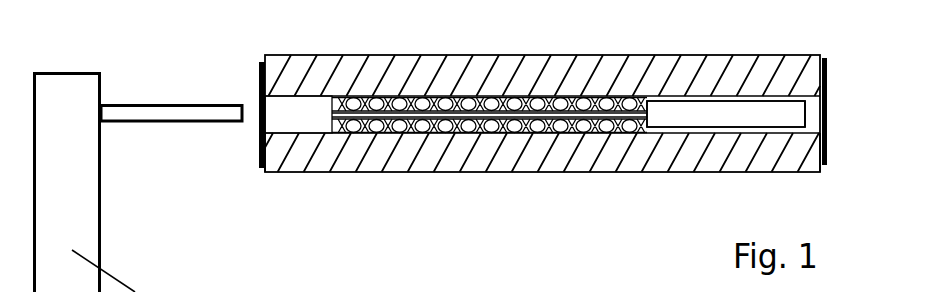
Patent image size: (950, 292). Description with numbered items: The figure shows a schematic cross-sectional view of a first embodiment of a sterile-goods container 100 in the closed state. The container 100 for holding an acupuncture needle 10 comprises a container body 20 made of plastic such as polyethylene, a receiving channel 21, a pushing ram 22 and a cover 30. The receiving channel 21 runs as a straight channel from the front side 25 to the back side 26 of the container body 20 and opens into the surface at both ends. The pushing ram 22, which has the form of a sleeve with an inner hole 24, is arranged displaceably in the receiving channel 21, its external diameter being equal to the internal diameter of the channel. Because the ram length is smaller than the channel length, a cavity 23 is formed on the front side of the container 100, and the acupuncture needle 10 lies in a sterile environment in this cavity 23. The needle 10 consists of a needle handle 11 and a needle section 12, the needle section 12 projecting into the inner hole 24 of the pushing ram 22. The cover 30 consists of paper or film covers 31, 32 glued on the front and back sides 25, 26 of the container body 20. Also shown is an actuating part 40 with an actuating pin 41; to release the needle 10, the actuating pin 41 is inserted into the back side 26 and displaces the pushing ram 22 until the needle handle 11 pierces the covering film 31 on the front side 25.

The container 100 is at (542, 43).
The acupuncture needle 10 is at (733, 124).
The needle handle 11 is at (697, 118).
The needle section 12 is at (572, 116).
The container body 20 is at (420, 73).
The receiving channel 21 is at (310, 121).
The pushing ram 22 is at (395, 125).
The cavity 23 is at (812, 118).
The inner hole 24 is at (452, 117).
The front side 25 is at (811, 181).
The back side 26 is at (262, 172).
The cover 30 is at (828, 120).
The covering film 31 is at (824, 66).
The covering film 32 is at (260, 80).
The actuating part 40 is at (148, 81).
The actuating pin 41 is at (178, 122).